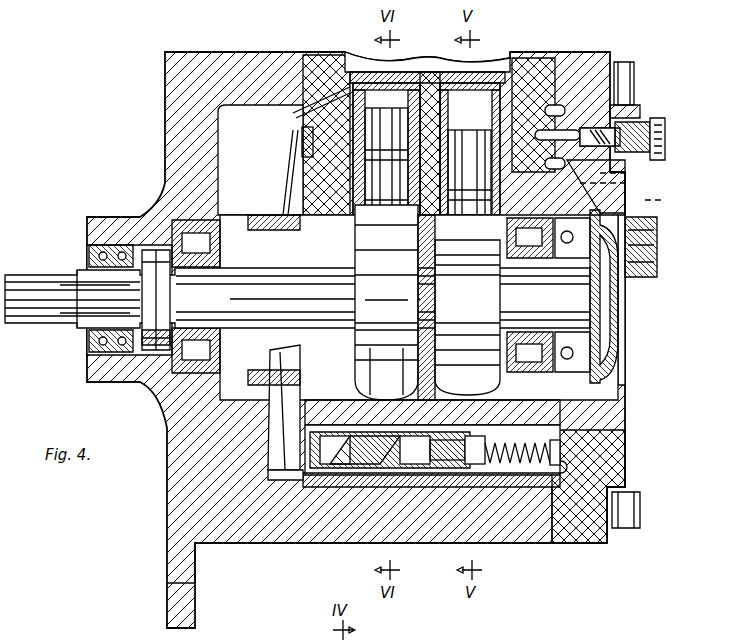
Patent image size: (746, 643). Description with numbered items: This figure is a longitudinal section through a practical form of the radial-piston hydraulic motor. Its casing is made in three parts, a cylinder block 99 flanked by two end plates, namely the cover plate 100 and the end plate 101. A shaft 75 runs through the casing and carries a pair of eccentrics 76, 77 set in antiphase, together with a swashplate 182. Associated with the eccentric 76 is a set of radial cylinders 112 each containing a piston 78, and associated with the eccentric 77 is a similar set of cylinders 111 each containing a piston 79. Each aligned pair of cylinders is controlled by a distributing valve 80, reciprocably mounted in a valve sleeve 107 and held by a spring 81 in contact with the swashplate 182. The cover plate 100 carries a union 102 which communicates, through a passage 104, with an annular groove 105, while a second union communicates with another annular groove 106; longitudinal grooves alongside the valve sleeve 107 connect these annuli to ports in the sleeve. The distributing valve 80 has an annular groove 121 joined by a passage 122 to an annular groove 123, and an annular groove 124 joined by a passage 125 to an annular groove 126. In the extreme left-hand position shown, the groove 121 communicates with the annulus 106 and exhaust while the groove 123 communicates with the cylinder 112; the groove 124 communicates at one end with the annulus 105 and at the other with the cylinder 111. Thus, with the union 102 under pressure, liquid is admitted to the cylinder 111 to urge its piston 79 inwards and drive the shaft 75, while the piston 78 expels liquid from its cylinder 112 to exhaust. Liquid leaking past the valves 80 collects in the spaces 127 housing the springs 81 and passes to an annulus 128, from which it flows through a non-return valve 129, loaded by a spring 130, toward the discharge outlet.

The shaft 75 is at (38, 278).
The eccentric 76 is at (393, 262).
The eccentric 77 is at (471, 301).
The piston 78 is at (395, 108).
The piston 79 is at (458, 165).
The distributing valve 80 is at (296, 430).
The spring 81 is at (545, 500).
The cylinder block 99 is at (530, 525).
The cover plate 100 is at (616, 450).
The end plate 101 is at (167, 520).
The union 102 is at (650, 200).
The passage 104 is at (640, 190).
The annular groove 105 is at (640, 176).
The annular groove 106 is at (558, 108).
The valve sleeve 107 is at (303, 478).
The cylinder 111 is at (485, 115).
The cylinder 112 is at (373, 83).
The annular groove 121 is at (315, 478).
The passage 122 is at (340, 478).
The annular groove 123 is at (428, 478).
The annular groove 124 is at (372, 478).
The passage 125 is at (412, 478).
The annular groove 126 is at (452, 478).
The space 127 is at (570, 430).
The annulus 128 is at (538, 110).
The non-return valve 129 is at (618, 80).
The spring 130 is at (625, 105).
The swashplate 182 is at (292, 147).